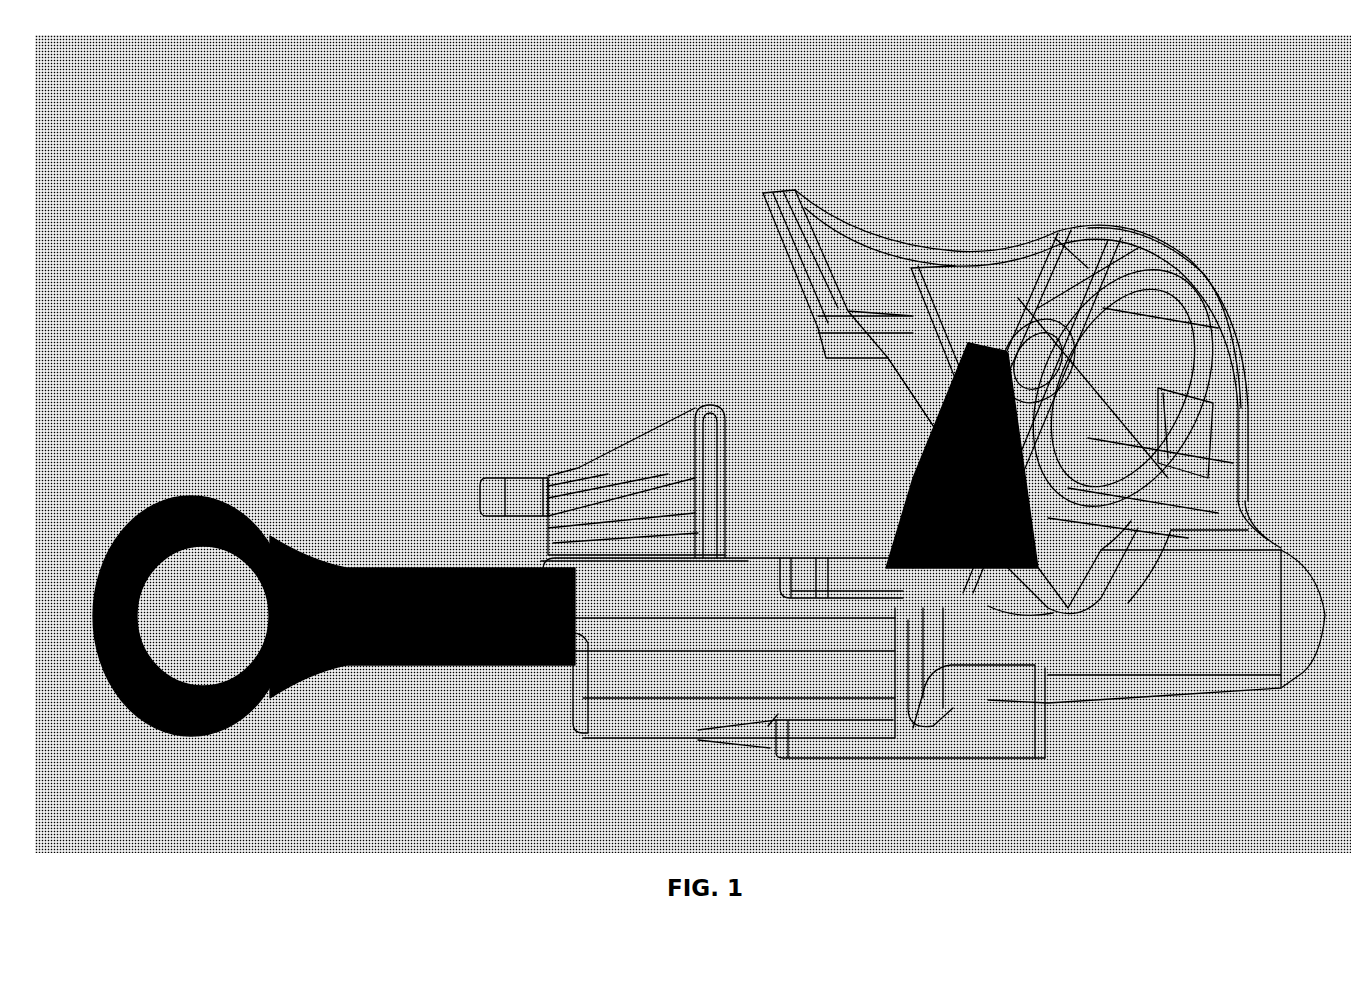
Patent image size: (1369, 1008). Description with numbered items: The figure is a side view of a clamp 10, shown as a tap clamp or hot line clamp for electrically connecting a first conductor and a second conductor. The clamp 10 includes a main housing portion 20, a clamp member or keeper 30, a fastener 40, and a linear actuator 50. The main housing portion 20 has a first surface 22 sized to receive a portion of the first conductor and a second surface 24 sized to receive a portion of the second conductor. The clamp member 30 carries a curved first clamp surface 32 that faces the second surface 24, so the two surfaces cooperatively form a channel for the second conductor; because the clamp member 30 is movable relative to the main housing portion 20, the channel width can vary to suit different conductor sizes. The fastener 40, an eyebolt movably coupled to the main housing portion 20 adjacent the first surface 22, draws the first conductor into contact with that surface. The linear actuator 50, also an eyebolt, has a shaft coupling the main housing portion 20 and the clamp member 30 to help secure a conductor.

The clamp 10 is at (490, 116).
The main housing portion 20 is at (996, 197).
The first surface 22 is at (1020, 560).
The second surface 24 is at (922, 462).
The clamp member 30 is at (593, 430).
The first clamp surface 32 is at (723, 468).
The fastener 40 is at (1093, 403).
The linear actuator 50 is at (248, 480).